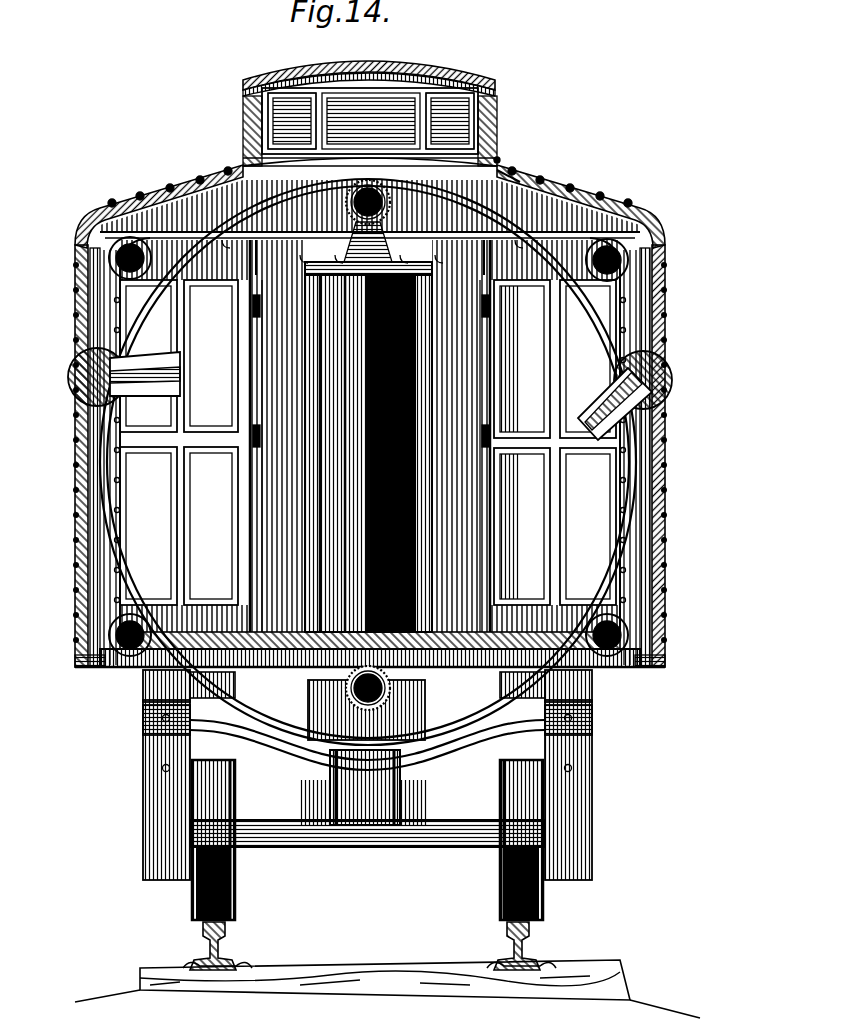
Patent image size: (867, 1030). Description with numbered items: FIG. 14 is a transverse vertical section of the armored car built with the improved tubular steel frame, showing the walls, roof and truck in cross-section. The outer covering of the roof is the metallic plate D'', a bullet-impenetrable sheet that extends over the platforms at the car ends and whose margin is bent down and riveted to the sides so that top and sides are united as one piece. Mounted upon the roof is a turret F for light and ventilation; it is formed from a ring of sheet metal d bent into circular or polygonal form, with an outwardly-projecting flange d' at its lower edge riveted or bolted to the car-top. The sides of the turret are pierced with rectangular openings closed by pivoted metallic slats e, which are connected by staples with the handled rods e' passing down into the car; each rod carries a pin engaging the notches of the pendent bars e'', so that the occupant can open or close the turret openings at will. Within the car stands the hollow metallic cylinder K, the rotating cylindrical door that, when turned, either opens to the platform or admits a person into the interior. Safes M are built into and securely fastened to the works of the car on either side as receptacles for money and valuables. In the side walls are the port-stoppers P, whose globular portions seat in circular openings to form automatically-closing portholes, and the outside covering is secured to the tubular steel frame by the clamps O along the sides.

The turret F is at (268, 72).
The metallic slats e is at (366, 121).
The ring of sheet metal d is at (508, 149).
The outwardly-projecting flange d' is at (524, 164).
The metallic plate D'' is at (370, 205).
The pendent bars e'' is at (372, 232).
The handled rods e' is at (370, 257).
The clamps O is at (80, 493).
The safes M is at (368, 442).
The hollow metallic cylinder K is at (368, 406).
The port-stopper P is at (70, 375).